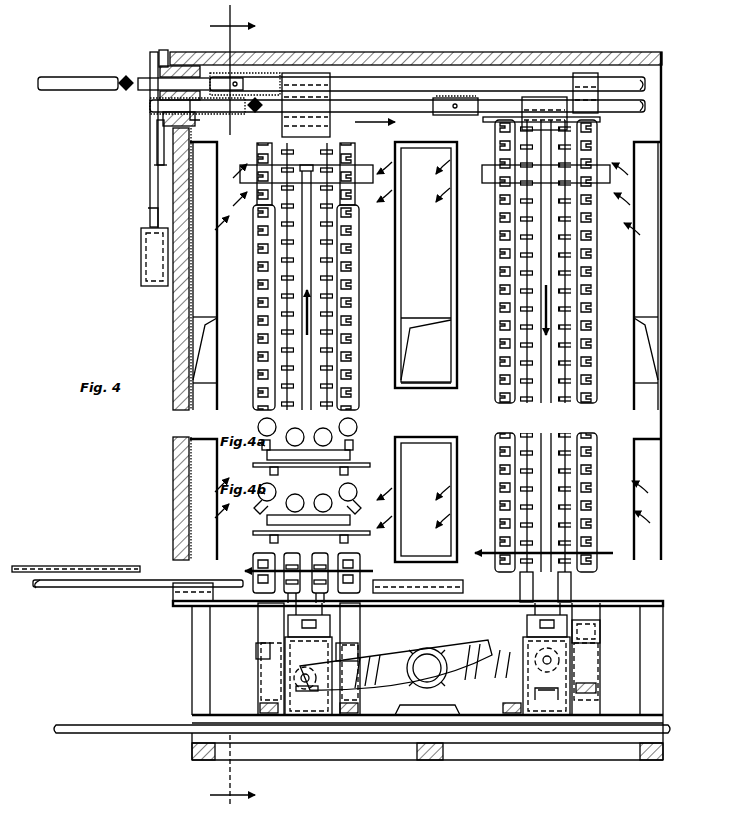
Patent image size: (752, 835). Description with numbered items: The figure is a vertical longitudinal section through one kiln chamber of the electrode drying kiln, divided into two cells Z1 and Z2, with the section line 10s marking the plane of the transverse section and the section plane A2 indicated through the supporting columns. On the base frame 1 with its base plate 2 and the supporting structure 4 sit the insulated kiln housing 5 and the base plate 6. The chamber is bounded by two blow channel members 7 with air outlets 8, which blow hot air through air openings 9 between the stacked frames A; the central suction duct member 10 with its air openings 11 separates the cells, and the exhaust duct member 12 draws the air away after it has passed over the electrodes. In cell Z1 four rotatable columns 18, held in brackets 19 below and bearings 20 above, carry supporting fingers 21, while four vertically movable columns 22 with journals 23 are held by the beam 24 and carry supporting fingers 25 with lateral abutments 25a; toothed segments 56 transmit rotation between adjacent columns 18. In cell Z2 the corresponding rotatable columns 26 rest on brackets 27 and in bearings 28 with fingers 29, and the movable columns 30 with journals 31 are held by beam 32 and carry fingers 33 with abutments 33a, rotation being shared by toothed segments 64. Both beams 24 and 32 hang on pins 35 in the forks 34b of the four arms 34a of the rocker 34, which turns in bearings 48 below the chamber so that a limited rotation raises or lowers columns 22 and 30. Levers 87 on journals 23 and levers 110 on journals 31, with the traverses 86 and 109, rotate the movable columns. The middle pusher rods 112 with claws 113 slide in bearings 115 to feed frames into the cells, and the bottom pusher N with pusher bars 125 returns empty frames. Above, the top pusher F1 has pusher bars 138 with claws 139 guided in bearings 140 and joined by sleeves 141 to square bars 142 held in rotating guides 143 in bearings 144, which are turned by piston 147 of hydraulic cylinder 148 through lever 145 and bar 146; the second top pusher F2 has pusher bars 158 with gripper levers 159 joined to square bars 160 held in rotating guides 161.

The base frame 1 is at (195, 744).
The base plate 2 is at (192, 714).
The supporting structure 4 is at (200, 664).
The insulated kiln housing 5 is at (430, 58).
The base plate 6 is at (465, 598).
The blow channel member 7 is at (425, 351).
The air outlet 8 is at (425, 350).
The air opening 9 is at (217, 298).
The suction duct member 10 is at (426, 352).
The section line 10s is at (230, 407).
The air opening 11 is at (458, 266).
The exhaust duct member 12 is at (426, 351).
The rotatable column 18 is at (316, 381).
The bracket 19 is at (308, 676).
The bearing 20 is at (358, 176).
The supporting finger 21 is at (301, 536).
The column 22 is at (256, 243).
The journal 23 is at (360, 648).
The beam 24 is at (262, 672).
The supporting finger 25 is at (352, 294).
The lateral abutment 25a is at (354, 272).
The rotatable column 26 is at (549, 346).
The bracket 27 is at (540, 640).
The bearing 28 is at (596, 176).
The supporting finger 29 is at (546, 361).
The column 30 is at (497, 406).
The journal 31 is at (598, 634).
The beam 32 is at (600, 655).
The supporting finger 33 is at (592, 480).
The lateral abutment 33a is at (592, 458).
The rocker 34 is at (428, 650).
The arm 34a is at (383, 662).
The fork 34b is at (458, 656).
The pin 35 is at (322, 688).
The bearing 48 is at (447, 692).
The toothed segment 56 is at (285, 627).
The toothed segment 64 is at (572, 618).
The traverse 86 is at (300, 690).
The lever 87 is at (262, 708).
The traverse 109 is at (560, 697).
The lever 110 is at (596, 689).
The pusher rod 112 is at (130, 582).
The claw 113 is at (36, 588).
The bearing 115 is at (440, 590).
The pusher bar 125 is at (104, 733).
The pusher bar 138 is at (376, 76).
The claw 139 is at (283, 120).
The bearing 140 is at (586, 74).
The sleeve 141 is at (230, 75).
The square bar 142 is at (140, 88).
The rotating guide 143 is at (150, 72).
The bearing 144 is at (170, 128).
The lever 145 is at (162, 50).
The bar 146 is at (150, 173).
The piston 147 is at (152, 259).
The hydraulic cylinder 148 is at (150, 237).
The pusher bar 158 is at (490, 116).
The gripper lever 159 is at (544, 113).
The square bar 160 is at (210, 116).
The rotating guide 161 is at (162, 120).
The frame A is at (590, 123).
The section plane A2 is at (300, 458).
The top pusher F1 is at (651, 92).
The top pusher F2 is at (651, 116).
The bottom pusher N is at (63, 730).
The cell Z1 is at (303, 329).
The cell Z2 is at (539, 331).